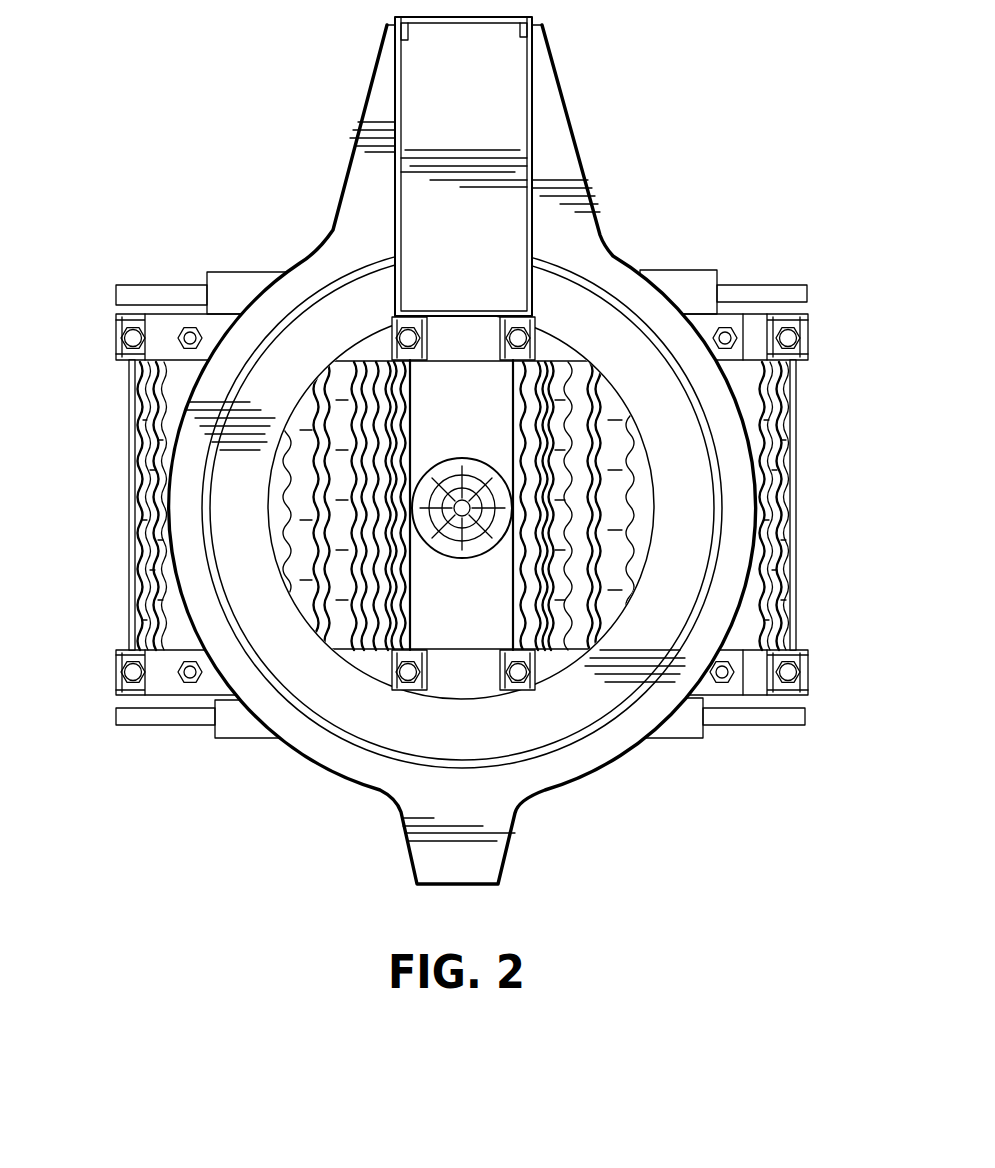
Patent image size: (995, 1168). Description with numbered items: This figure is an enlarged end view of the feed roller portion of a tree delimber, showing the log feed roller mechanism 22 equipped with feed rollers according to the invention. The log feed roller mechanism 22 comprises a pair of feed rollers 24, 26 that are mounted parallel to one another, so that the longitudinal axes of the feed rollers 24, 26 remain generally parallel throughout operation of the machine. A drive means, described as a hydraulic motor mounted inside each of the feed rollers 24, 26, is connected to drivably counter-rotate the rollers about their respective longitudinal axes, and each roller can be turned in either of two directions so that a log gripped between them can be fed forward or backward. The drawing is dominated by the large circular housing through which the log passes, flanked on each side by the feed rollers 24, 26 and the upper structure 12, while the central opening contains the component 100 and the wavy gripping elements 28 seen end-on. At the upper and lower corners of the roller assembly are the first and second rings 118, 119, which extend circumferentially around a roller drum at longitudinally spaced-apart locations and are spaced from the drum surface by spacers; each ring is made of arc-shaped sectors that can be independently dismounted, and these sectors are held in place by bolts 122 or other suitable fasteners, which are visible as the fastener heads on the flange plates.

The upper housing column 12 is at (538, 107).
The log feed roller mechanism 22 is at (100, 517).
The feed roller 24 is at (796, 425).
The feed roller 26 is at (129, 401).
The wavy seal elements 28 is at (337, 591).
The shaft / hub 100 is at (470, 455).
The first ring 118 is at (802, 313).
The second ring 119 is at (793, 698).
The bolts 122 is at (797, 341).